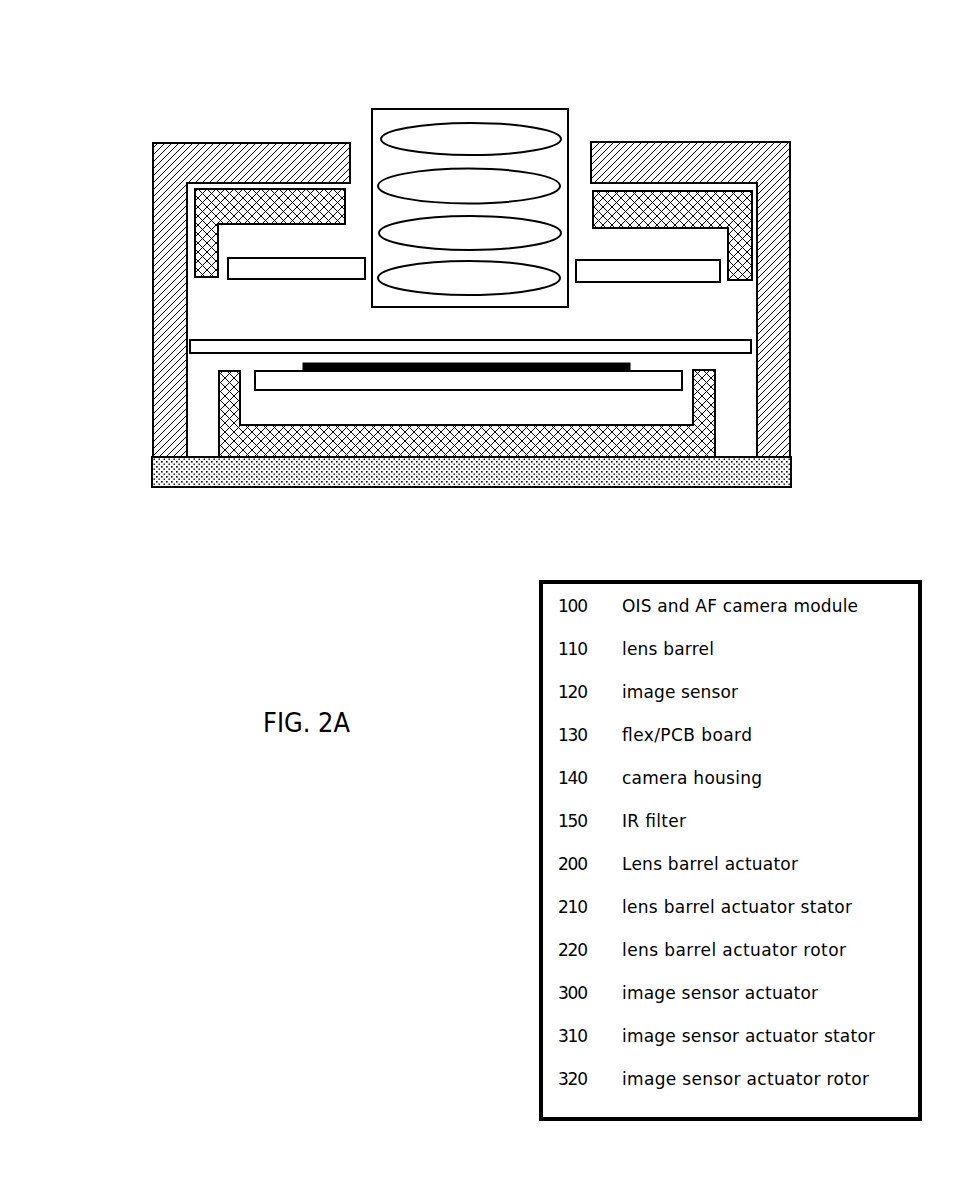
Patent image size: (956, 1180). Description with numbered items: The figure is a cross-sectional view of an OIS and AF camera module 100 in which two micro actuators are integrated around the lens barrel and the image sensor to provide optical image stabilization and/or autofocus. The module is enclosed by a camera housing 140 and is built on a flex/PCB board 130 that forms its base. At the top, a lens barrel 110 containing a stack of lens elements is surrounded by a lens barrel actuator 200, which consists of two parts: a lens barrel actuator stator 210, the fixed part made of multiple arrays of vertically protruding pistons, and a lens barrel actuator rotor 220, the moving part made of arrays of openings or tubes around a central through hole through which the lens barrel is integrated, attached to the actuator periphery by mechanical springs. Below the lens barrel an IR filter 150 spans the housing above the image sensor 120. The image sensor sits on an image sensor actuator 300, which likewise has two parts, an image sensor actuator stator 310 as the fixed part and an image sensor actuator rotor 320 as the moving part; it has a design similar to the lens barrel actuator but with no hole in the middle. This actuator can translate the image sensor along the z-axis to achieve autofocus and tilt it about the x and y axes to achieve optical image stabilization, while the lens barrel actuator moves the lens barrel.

The OIS and AF camera module 100 is at (240, 84).
The lens barrel 110 is at (517, 106).
The image sensor 120 is at (395, 372).
The flex/PCB board 130 is at (455, 485).
The camera housing 140 is at (740, 168).
The IR filter 150 is at (200, 347).
The lens barrel actuator 200 is at (466, 277).
The lens barrel actuator stator 210 is at (748, 265).
The lens barrel actuator rotor 220 is at (668, 278).
The image sensor actuator 300 is at (490, 452).
The image sensor actuator stator 310 is at (687, 450).
The image sensor actuator rotor 320 is at (662, 383).